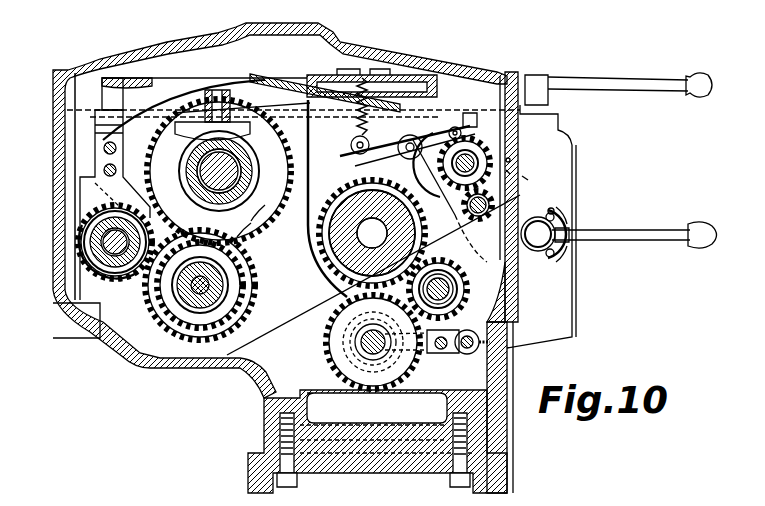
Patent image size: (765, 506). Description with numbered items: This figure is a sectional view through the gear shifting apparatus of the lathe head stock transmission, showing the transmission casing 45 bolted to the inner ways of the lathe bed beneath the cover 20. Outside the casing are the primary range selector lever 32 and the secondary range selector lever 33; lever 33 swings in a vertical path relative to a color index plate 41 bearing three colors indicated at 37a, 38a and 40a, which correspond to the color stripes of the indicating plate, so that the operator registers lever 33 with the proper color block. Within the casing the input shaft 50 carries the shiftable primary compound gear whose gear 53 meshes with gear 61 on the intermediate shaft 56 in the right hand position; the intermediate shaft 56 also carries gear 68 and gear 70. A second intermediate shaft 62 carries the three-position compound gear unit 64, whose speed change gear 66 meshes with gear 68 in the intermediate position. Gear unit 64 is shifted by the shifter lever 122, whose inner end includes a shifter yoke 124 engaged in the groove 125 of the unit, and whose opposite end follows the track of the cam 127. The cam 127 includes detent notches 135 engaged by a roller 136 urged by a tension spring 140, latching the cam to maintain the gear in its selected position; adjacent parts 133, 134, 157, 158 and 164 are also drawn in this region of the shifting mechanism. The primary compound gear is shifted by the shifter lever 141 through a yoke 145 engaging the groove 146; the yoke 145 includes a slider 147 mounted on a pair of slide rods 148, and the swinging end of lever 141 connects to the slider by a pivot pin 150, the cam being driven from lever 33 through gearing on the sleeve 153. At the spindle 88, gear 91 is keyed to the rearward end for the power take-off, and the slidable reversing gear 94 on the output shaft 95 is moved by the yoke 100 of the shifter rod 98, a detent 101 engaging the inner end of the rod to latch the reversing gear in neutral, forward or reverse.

The housing cover 20 is at (186, 42).
The primary range selector lever 32 is at (630, 78).
The secondary range selector lever 33 is at (657, 231).
The color block 37a is at (566, 210).
The color block 38a is at (566, 224).
The color block 40a is at (570, 245).
The color index plate 41 is at (548, 209).
The transmission casing 45 is at (96, 344).
The input shaft 50 is at (117, 282).
The gear 53 is at (100, 276).
The intermediate shaft 56 is at (150, 318).
The gear 61 is at (242, 296).
The second intermediate shaft 62 is at (218, 208).
The compound gear unit 64 is at (268, 206).
The speed change gear 66 is at (262, 238).
The gear 68 is at (250, 310).
The gear 70 is at (250, 284).
The spindle 88 is at (338, 260).
The gear 91 is at (350, 196).
The reversing gear 94 is at (323, 344).
The output shaft 95 is at (466, 282).
The shifter rod 98 is at (466, 355).
The yoke 100 is at (427, 357).
The detent 101 is at (505, 362).
The shifter lever 122 is at (268, 74).
The shifter yoke 124 is at (190, 136).
The groove 125 is at (185, 170).
The cam 127 is at (490, 198).
The gear 133 is at (444, 258).
The lever 134 is at (527, 178).
The detent notches 135 is at (507, 172).
The roller 136 is at (509, 158).
The tension spring 140 is at (355, 135).
The shifter lever 141 is at (236, 90).
The yoke 145 is at (80, 200).
The groove 146 is at (78, 248).
The slider 147 is at (96, 138).
The slide rods 148 is at (104, 168).
The pivot pin 150 is at (110, 112).
The sleeve 153 is at (433, 202).
The latch lever 157 is at (447, 120).
The link 158 is at (402, 150).
The stud 164 is at (549, 211).